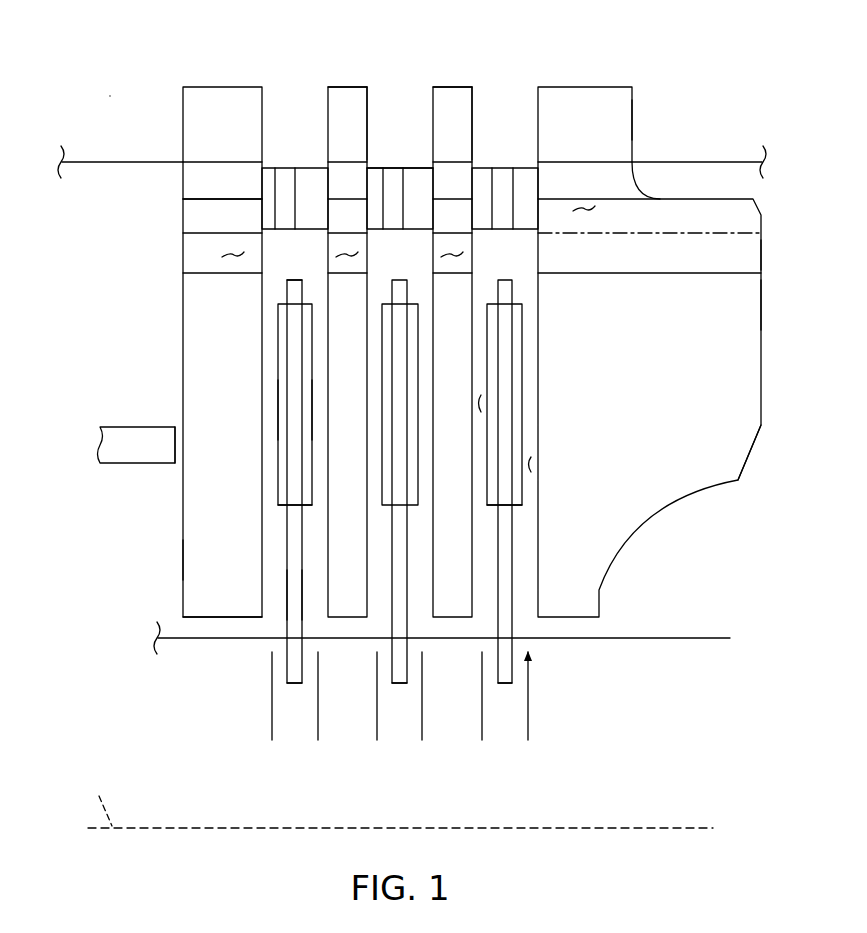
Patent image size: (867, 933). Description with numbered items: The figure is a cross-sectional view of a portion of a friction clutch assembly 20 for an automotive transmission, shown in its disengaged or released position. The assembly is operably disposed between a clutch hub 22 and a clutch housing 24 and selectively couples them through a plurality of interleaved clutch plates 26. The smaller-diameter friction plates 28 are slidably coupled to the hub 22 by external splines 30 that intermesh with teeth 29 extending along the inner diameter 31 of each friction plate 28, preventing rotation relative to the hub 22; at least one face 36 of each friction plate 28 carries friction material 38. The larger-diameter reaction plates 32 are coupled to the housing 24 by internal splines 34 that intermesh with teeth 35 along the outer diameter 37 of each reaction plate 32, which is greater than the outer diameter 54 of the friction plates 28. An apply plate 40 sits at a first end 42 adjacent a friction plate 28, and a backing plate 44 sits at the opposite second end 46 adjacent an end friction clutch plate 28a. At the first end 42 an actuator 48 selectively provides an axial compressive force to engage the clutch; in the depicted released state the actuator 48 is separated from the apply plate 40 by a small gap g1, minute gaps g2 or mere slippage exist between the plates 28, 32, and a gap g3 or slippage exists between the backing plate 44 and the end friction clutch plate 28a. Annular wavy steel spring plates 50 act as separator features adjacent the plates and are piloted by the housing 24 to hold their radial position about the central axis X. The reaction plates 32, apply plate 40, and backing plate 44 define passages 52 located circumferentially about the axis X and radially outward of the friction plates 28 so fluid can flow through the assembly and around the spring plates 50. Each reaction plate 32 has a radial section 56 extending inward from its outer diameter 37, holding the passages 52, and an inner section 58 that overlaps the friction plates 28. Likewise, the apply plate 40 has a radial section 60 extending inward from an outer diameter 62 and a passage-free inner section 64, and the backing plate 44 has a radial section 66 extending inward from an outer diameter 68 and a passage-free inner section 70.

The friction clutch assembly 20 is at (108, 282).
The clutch hub 22 is at (678, 640).
The clutch housing 24 is at (738, 160).
The interleaved clutch plates 26 is at (398, 157).
The friction plate 28 is at (298, 563).
The end friction clutch plate 28a is at (506, 563).
The teeth 29 is at (300, 683).
The splines 30 is at (285, 680).
The inner diameter 31 is at (296, 692).
The reaction plate 32 is at (325, 333).
The splines 34 is at (368, 98).
The teeth 35 is at (342, 95).
The face 36 is at (286, 587).
The outer diameter 37 is at (348, 77).
The friction material 38 is at (308, 396).
The apply plate 40 is at (188, 560).
The first end 42 is at (108, 94).
The backing plate 44 is at (762, 305).
The second end 46 is at (784, 256).
The actuator 48 is at (136, 460).
The spring plates 50 is at (276, 188).
The passages 52 is at (585, 208).
The outer diameter 54 is at (296, 282).
The radial section 56 is at (357, 172).
The inner section 58 is at (335, 535).
The radial section 60 is at (186, 190).
The outer diameter 62 is at (222, 87).
The inner section 64 is at (188, 608).
The radial section 66 is at (626, 118).
The outer diameter 68 is at (612, 87).
The inner section 70 is at (728, 442).
The gap g1 is at (181, 432).
The minute gaps g2 is at (484, 403).
The gap g3 is at (533, 468).
The central axis X is at (400, 800).